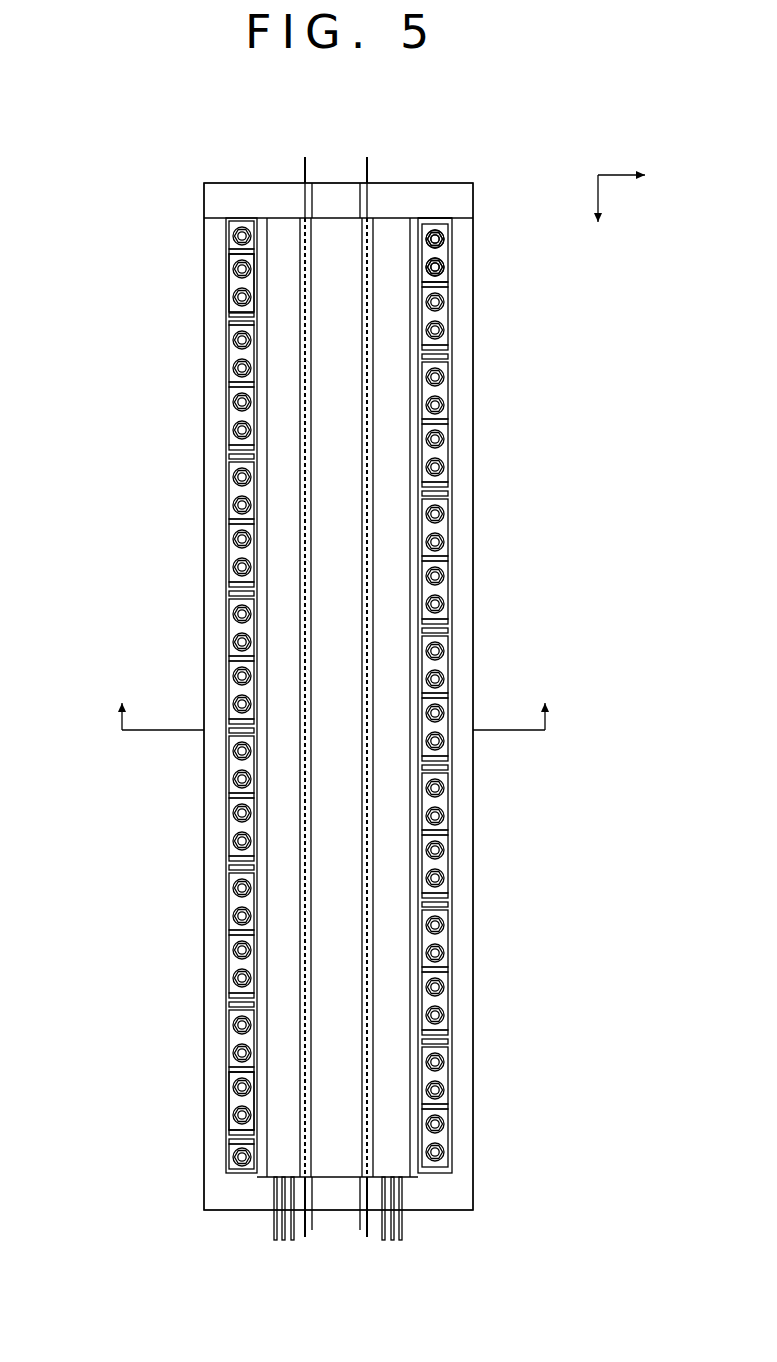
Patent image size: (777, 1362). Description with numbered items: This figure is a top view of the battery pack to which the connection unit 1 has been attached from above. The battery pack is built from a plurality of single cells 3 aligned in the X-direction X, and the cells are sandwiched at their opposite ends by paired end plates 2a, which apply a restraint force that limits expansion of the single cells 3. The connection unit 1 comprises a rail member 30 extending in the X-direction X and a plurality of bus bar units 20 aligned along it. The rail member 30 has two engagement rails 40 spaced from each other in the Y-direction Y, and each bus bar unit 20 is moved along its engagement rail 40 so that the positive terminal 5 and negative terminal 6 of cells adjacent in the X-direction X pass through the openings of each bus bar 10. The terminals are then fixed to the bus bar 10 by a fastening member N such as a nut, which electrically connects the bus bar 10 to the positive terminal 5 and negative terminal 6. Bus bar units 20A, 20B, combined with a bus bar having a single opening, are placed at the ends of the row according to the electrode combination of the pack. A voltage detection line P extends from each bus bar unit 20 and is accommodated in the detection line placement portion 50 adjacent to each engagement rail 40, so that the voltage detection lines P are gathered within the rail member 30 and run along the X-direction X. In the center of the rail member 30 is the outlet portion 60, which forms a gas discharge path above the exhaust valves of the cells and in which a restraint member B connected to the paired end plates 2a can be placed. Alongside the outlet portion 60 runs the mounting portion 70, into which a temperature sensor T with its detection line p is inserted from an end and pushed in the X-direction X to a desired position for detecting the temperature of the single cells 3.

The connection unit 1 is at (415, 1180).
The rail member 30 is at (338, 696).
The end plate 2a is at (226, 196).
The single cell 3 is at (228, 236).
The positive terminal 5 is at (435, 236).
The negative terminal 6 is at (430, 267).
The bus bar 10 is at (228, 250).
The bus bar unit 20 is at (222, 387).
The bus bar unit 20A is at (222, 1080).
The bus bar unit 20B is at (222, 280).
The engagement rail 40 is at (267, 223).
The detection line placement portion 50 is at (280, 226).
The outlet portion 60 is at (336, 227).
The mounting portion 70 is at (361, 254).
The fastening member N is at (456, 222).
The voltage detection line P is at (275, 1240).
The detection line p is at (305, 166).
The restraint member B is at (338, 182).
The temperature sensor T is at (306, 730).
The X-direction X is at (597, 213).
The Y-direction Y is at (631, 176).